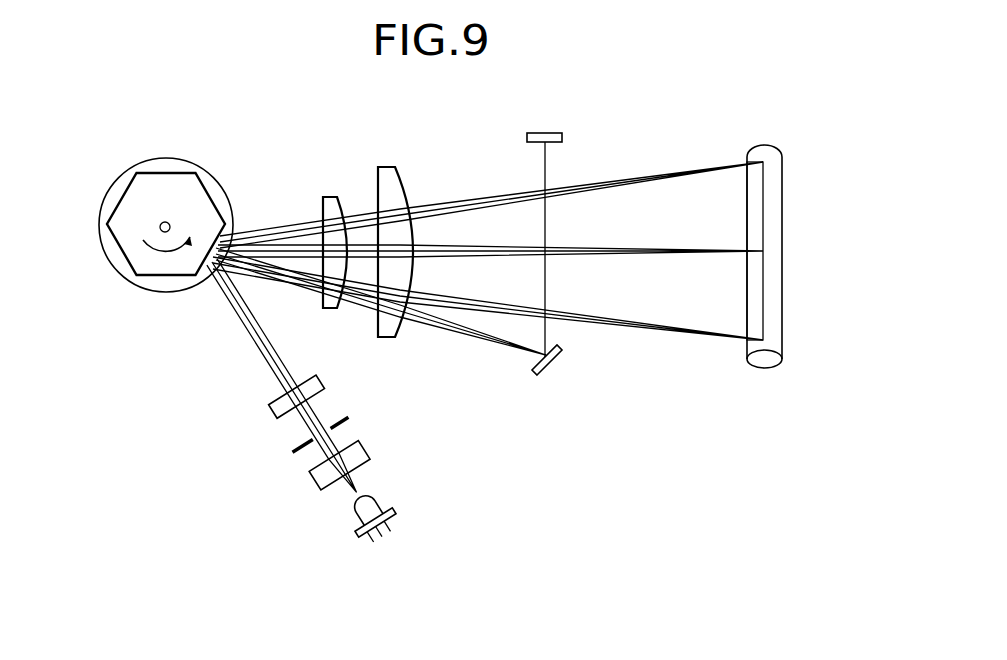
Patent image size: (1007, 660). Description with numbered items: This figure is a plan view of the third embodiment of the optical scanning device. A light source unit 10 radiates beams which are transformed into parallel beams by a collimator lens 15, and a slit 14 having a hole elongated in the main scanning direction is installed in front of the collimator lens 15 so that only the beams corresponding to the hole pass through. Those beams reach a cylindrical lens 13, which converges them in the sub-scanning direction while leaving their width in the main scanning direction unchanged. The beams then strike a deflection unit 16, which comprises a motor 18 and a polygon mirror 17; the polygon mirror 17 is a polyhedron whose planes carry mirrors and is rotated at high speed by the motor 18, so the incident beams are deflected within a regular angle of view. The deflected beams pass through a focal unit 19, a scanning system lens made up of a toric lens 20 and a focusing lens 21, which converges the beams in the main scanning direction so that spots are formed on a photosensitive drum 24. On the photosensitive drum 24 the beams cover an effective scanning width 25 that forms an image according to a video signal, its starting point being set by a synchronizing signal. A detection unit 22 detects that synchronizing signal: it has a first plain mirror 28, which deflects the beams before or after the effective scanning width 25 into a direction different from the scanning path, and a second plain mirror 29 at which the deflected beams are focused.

The light source unit 10 is at (358, 512).
The cylindrical lens 13 is at (320, 477).
The slit 14 is at (292, 445).
The collimator lens 15 is at (280, 403).
The deflection unit 16 is at (137, 226).
The polygon mirror 17 is at (133, 248).
The motor 18 is at (167, 284).
The focal unit 19 is at (385, 212).
The toric lens 20 is at (336, 196).
The focusing lens 21 is at (407, 185).
The detection unit 22 is at (592, 264).
The photosensitive drum 24 is at (806, 256).
The effective scanning width 25 is at (765, 214).
The first plain mirror 28 is at (548, 374).
The second plain mirror 29 is at (550, 128).